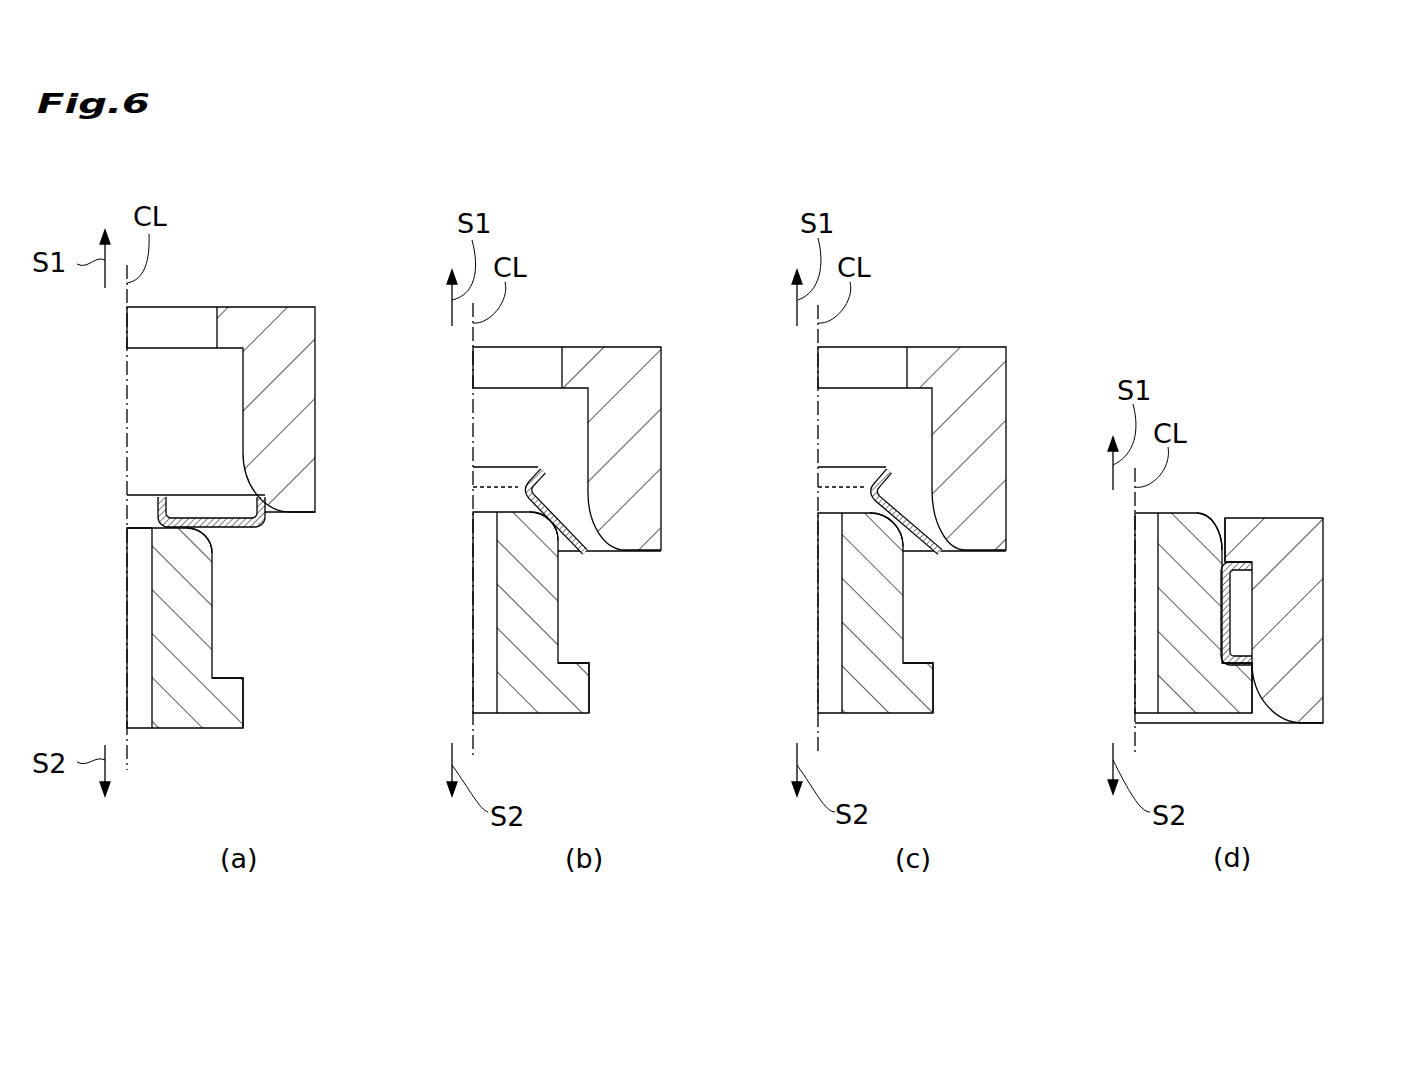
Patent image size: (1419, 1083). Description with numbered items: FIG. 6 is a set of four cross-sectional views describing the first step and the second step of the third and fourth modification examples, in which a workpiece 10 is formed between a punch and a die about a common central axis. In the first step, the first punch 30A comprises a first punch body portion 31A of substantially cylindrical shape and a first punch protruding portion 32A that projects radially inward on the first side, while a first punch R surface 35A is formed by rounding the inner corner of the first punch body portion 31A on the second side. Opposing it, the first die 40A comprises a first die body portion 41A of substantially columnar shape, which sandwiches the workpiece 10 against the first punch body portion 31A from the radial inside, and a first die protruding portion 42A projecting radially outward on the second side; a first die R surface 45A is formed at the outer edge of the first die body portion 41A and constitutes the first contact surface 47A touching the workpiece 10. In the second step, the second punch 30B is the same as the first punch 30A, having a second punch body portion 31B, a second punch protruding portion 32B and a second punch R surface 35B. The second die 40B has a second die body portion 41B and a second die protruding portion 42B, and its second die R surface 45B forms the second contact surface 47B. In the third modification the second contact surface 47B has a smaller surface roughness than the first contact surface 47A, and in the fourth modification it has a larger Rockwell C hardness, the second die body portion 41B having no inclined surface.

The workpiece 10 is at (774, 541).
The first punch 30A is at (436, 420).
The first punch body portion 31A is at (481, 428).
The first punch protruding portion 32A is at (396, 317).
The first punch R surface 35A is at (490, 552).
The first die 40A is at (370, 655).
The first die body portion 41A is at (314, 620).
The first die protruding portion 42A is at (450, 695).
The first die R surface 45A is at (443, 569).
The first contact surface 47A is at (443, 569).
The second punch 30B is at (1112, 533).
The second punch body portion 31B is at (1156, 535).
The second punch protruding portion 32B is at (1091, 422).
The second punch R surface 35B is at (1113, 667).
The second die 40B is at (1031, 604).
The second die body portion 41B is at (993, 613).
The second die protruding portion 42B is at (1089, 741).
The second die R surface 45B is at (1098, 521).
The second contact surface 47B is at (1098, 521).